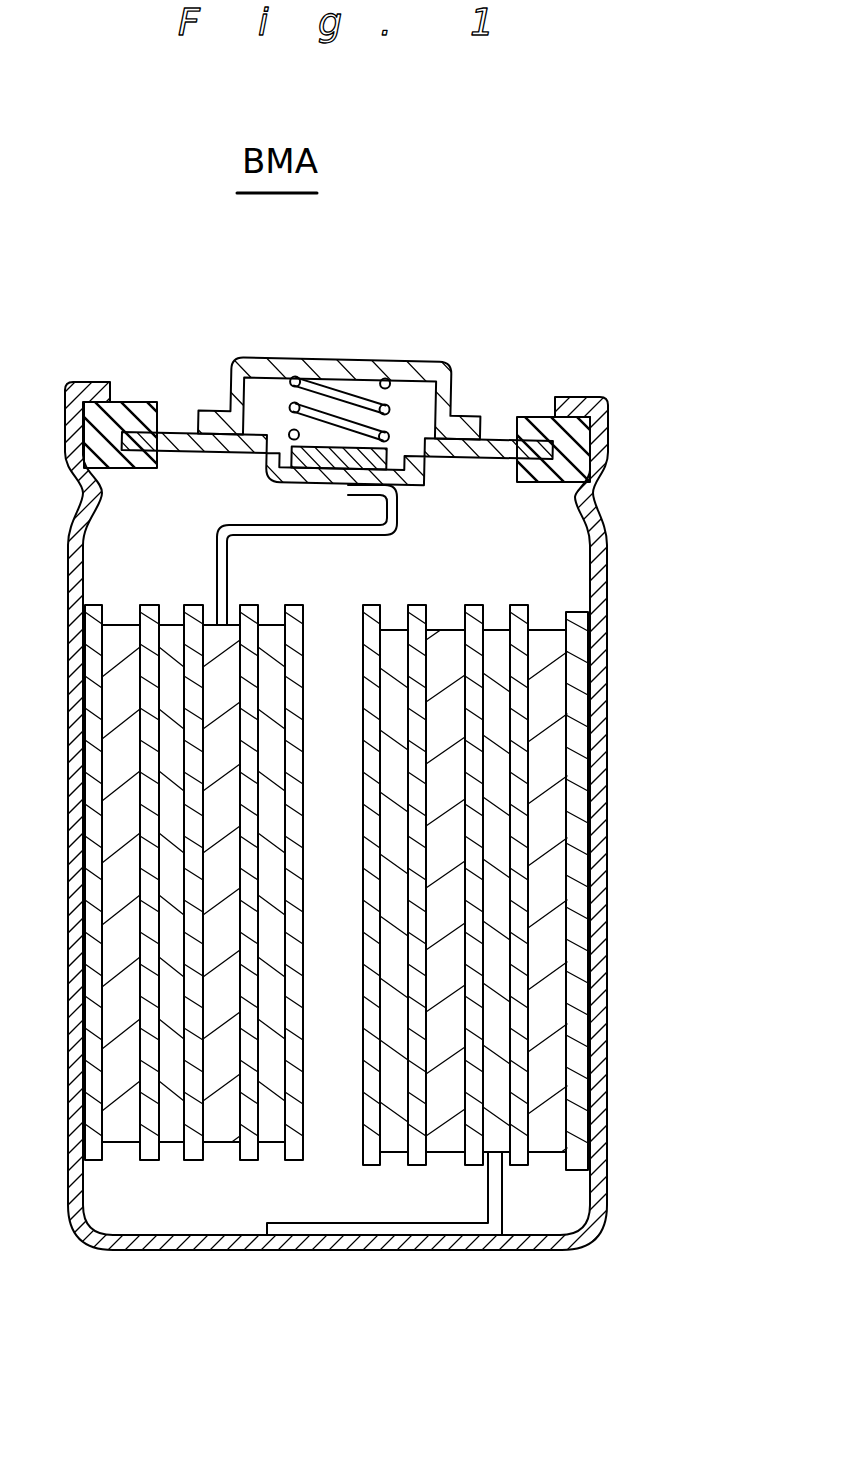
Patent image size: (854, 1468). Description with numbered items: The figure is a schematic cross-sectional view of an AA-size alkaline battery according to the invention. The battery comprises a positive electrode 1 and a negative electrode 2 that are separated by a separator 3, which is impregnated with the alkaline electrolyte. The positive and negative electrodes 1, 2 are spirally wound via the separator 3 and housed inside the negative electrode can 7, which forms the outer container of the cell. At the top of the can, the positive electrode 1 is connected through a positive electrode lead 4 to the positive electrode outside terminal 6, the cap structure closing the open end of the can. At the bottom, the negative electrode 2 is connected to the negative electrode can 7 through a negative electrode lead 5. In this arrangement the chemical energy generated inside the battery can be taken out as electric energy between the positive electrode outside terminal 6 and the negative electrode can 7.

The positive electrode 1 is at (545, 790).
The negative electrode 2 is at (497, 963).
The separator 3 is at (518, 698).
The positive electrode lead 4 is at (217, 522).
The negative electrode lead 5 is at (340, 1233).
The positive electrode outside terminal 6 is at (402, 363).
The negative electrode can 7 is at (605, 1145).